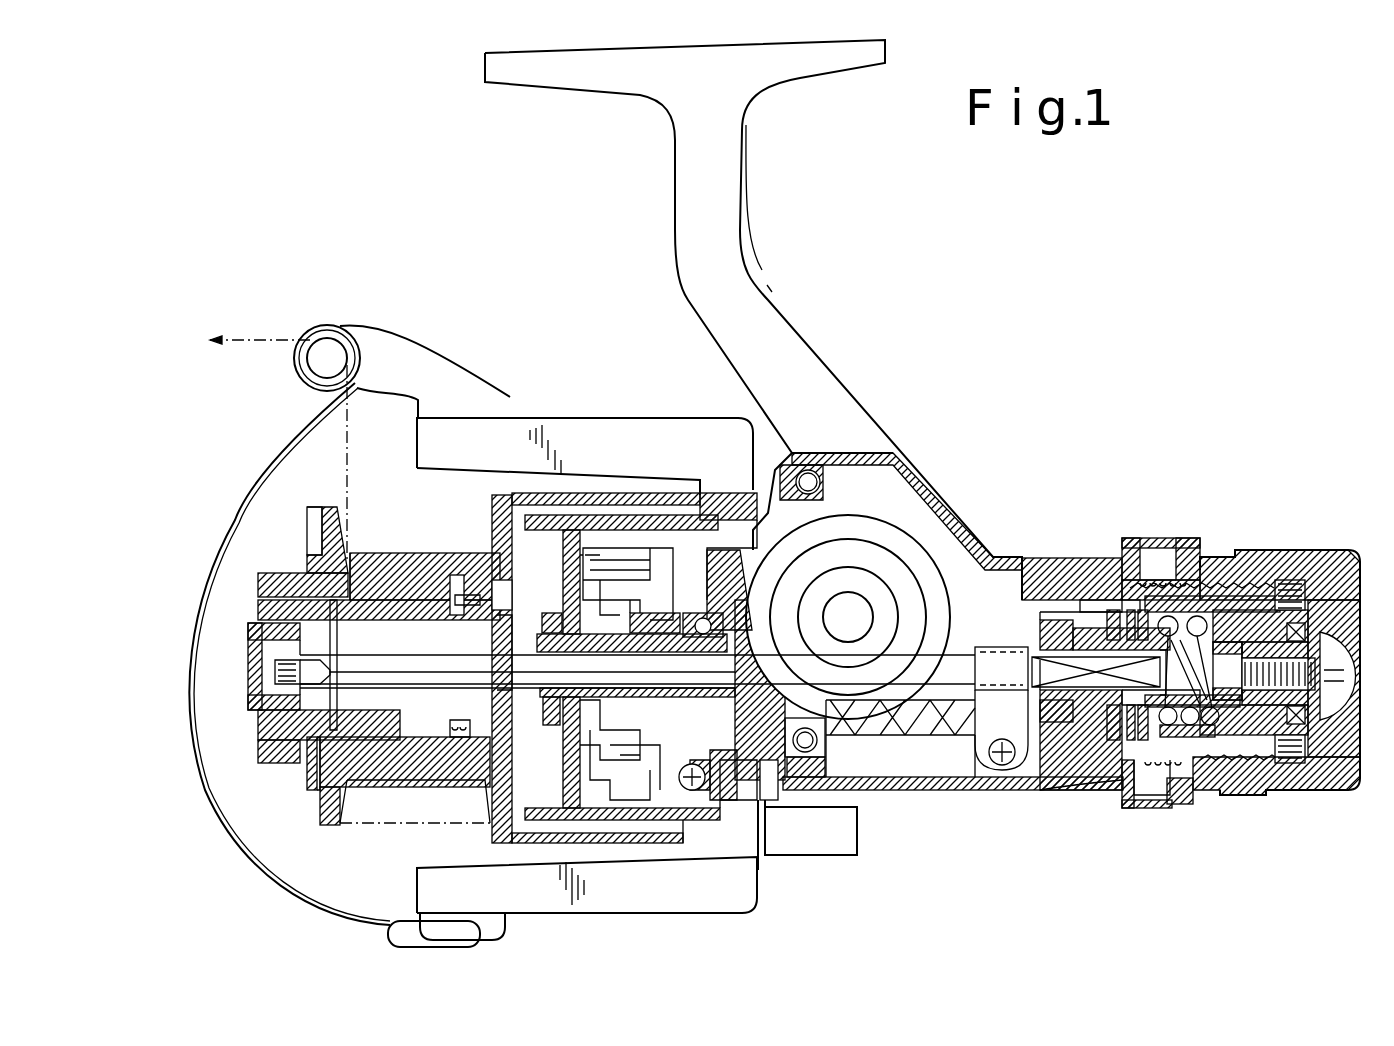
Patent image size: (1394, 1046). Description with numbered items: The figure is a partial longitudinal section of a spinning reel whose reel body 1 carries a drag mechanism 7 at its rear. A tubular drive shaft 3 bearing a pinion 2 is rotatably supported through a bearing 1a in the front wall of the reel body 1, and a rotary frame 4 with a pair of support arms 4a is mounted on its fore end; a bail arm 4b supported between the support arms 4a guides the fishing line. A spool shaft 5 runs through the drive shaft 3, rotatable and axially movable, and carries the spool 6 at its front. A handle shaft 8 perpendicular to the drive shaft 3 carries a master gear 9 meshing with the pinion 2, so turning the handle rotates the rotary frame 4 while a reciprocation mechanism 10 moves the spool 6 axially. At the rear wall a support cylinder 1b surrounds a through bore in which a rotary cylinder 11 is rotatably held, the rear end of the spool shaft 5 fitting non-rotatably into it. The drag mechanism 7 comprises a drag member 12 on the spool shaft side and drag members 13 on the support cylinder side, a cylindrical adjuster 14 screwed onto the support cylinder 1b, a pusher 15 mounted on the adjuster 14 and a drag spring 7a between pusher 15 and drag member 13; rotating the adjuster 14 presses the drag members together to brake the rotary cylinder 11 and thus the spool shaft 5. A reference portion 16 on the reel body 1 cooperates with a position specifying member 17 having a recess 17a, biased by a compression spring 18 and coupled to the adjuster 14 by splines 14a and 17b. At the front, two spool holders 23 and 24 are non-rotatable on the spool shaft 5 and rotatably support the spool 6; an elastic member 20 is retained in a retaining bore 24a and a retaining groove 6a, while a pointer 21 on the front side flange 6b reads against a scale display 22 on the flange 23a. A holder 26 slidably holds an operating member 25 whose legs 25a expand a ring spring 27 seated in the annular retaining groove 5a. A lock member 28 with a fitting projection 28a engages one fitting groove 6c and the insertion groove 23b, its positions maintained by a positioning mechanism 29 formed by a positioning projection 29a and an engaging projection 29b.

The reel body 1 is at (875, 452).
The bearing 1a is at (690, 595).
The support cylinder 1b is at (1230, 595).
The pinion 2 is at (778, 710).
The drive shaft 3 is at (660, 700).
The rotary frame 4 is at (622, 522).
The support arms 4a is at (535, 432).
The bail arm 4b is at (188, 708).
The spool shaft 5 is at (530, 688).
The annular retaining groove 5a is at (330, 680).
The spool 6 is at (400, 553).
The retaining groove 6a is at (497, 588).
The front side flange 6b is at (322, 820).
The fitting grooves 6c is at (352, 556).
The drag mechanism 7 is at (1150, 640).
The drag spring 7a is at (1213, 630).
The handle shaft 8 is at (857, 605).
The master gear 9 is at (930, 572).
The reciprocation mechanism 10 is at (970, 743).
The rotary cylinder 11 is at (1087, 625).
The drag member 12 is at (1130, 582).
The drag members 13 is at (1118, 620).
The adjuster 14 is at (1330, 570).
The splines 14a is at (1193, 605).
The pusher 15 is at (1283, 600).
The reference portion 16 is at (1120, 790).
The position specifying member 17 is at (1180, 808).
The position specifying recess 17a is at (1133, 808).
The splines 17b is at (1170, 565).
The compression spring 18 is at (1160, 795).
The elastic member 20 is at (458, 610).
The pointer 21 is at (320, 797).
The scale display 22 is at (303, 787).
The spool holder 23 is at (420, 737).
The flange 23a is at (307, 770).
The insertion groove 23b is at (300, 567).
The spool holder 24 is at (482, 737).
The retaining bore 24a is at (500, 613).
The operating member 25 is at (250, 645).
The legs 25a is at (278, 687).
The holder 26 is at (258, 605).
The ring spring 27 is at (330, 712).
The lock member 28 is at (300, 575).
The fitting projection 28a is at (318, 520).
The positioning mechanism 29 is at (150, 530).
The positioning projection 29a is at (300, 600).
The engaging projection 29b is at (298, 588).